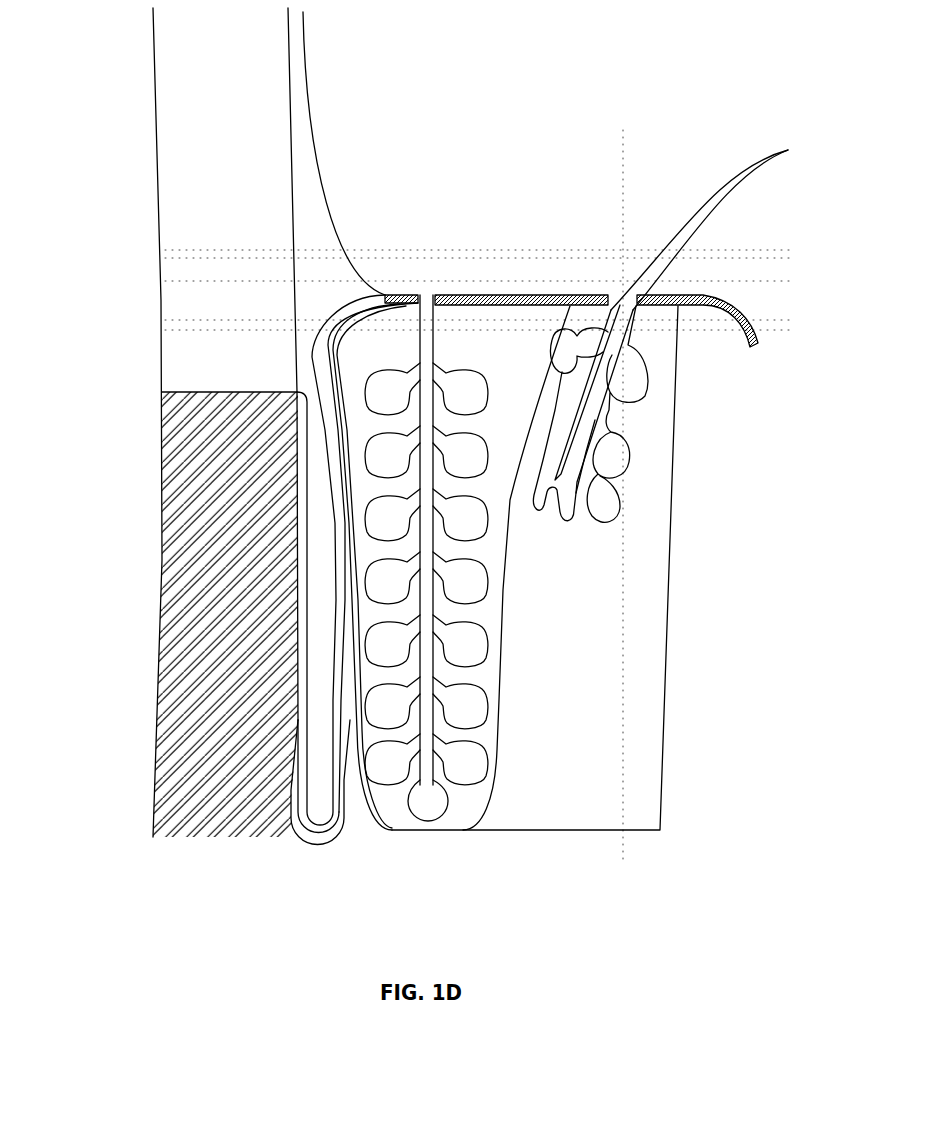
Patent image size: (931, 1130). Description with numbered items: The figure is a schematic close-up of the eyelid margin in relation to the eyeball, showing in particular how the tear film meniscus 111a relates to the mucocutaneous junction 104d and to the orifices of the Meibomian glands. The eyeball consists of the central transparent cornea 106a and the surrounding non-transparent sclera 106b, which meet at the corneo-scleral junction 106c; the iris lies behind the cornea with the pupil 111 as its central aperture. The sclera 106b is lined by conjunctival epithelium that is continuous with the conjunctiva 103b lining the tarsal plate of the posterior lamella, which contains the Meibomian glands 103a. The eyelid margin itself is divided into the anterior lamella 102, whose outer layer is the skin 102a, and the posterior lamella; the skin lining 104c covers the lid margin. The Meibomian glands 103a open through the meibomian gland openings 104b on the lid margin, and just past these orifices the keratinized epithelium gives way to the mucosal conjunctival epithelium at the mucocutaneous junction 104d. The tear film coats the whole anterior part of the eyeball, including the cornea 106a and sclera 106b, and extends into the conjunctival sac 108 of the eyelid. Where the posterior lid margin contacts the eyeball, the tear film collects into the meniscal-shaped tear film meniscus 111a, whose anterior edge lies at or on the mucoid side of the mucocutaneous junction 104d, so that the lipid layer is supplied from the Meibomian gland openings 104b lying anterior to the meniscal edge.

The anterior lamella 102 is at (602, 625).
The skin 102a is at (648, 316).
The Meibomian glands 103a is at (427, 808).
The conjunctiva 103b is at (333, 483).
The meibomian gland opening 104b is at (431, 294).
The skin lining 104c is at (532, 292).
The mucocutaneous junction 104d is at (393, 294).
The cornea 106a is at (175, 252).
The sclera 106b is at (163, 556).
The corneo-scleral junction 106c is at (297, 683).
The conjunctival sac 108 is at (313, 820).
The pupil 111 is at (305, 75).
The tear film meniscus 111a is at (313, 299).